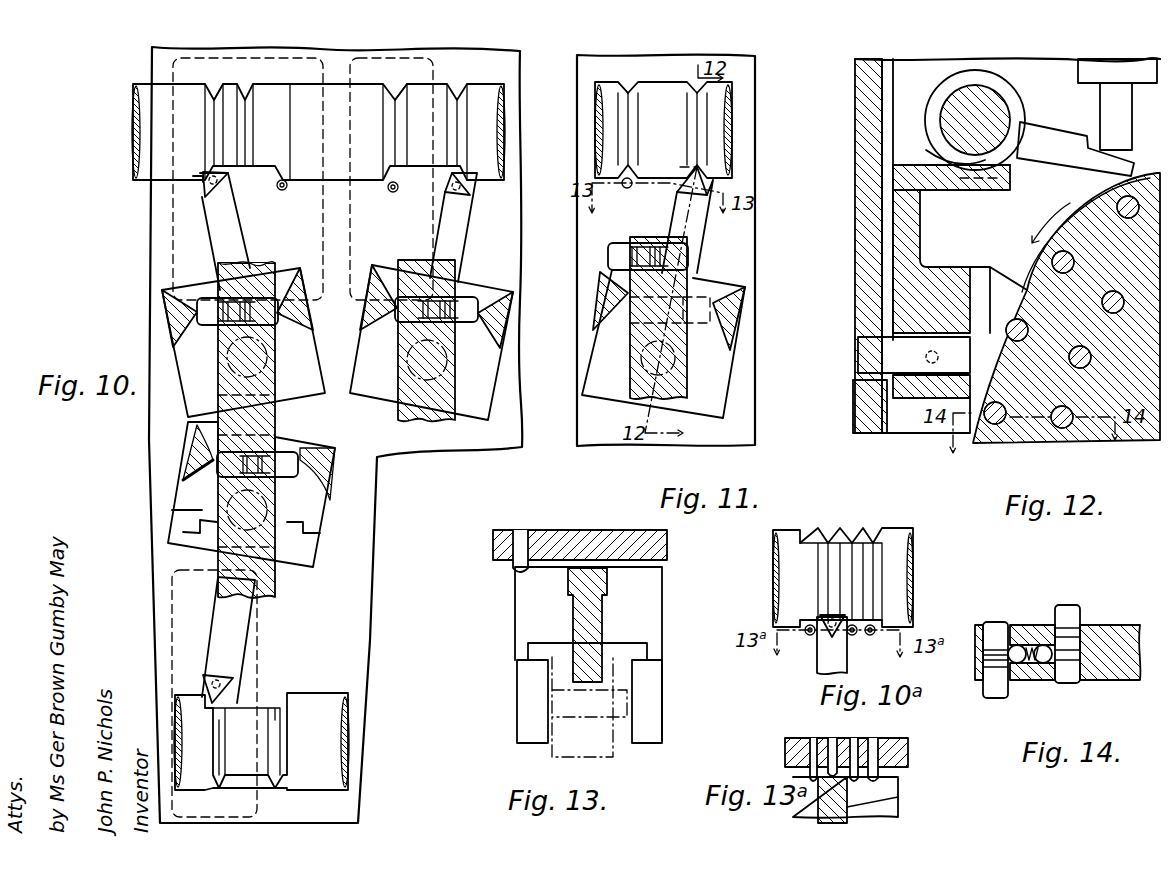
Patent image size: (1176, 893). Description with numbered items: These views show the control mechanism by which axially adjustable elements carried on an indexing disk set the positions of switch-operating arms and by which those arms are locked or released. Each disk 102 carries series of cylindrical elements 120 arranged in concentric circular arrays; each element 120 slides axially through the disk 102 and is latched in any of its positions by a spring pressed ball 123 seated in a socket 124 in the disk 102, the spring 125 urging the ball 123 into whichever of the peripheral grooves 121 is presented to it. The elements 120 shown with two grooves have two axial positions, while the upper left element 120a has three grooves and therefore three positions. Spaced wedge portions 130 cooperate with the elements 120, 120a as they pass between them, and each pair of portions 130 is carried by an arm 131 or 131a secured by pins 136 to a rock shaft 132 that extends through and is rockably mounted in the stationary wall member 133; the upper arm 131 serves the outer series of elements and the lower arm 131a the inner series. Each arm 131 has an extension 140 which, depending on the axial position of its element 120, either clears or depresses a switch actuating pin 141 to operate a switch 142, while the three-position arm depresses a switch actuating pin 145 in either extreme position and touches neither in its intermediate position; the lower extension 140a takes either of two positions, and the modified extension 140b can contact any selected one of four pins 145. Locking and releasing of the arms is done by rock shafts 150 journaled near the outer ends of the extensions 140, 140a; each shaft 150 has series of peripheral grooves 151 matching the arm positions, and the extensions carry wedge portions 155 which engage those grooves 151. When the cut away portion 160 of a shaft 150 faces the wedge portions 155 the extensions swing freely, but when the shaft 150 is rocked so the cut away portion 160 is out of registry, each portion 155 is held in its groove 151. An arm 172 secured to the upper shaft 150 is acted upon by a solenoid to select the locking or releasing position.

In FIG. 10, the disk 102 is at (275, 423).
In FIG. 11, the disk 102 is at (632, 370).
In FIG. 12, the disk 102 is at (1107, 362).
In FIG. 13, the disk 102 is at (553, 753).
In FIG. 14, the disk 102 is at (1115, 682).
In FIG. 10, the element 120 is at (463, 303).
In FIG. 11, the element 120 is at (613, 248).
In FIG. 12, the element 120 is at (1057, 432).
In FIG. 13, the element 120 is at (613, 723).
In FIG. 14, the element 120 is at (1073, 617).
In FIG. 10, the element 120a is at (202, 312).
In FIG. 14, the element 120a is at (990, 632).
In FIG. 10, the peripheral grooves 121 is at (425, 267).
In FIG. 11, the peripheral grooves 121 is at (660, 238).
In FIG. 14, the peripheral grooves 121 is at (1083, 637).
In FIG. 14, the spring pressed ball 123 is at (1018, 632).
In FIG. 14, the socket 124 is at (1032, 647).
In FIG. 14, the spring 125 is at (1032, 660).
In FIG. 10, the wedge portions 130 is at (397, 308).
In FIG. 11, the wedge portions 130 is at (595, 295).
In FIG. 12, the wedge portions 130 is at (1003, 280).
In FIG. 13, the wedge portions 130 is at (520, 682).
In FIG. 10, the arm 131 is at (183, 397).
In FIG. 11, the arm 131 is at (597, 400).
In FIG. 12, the arm 131 is at (858, 408).
In FIG. 13, the arm 131 is at (663, 605).
In FIG. 10, the arm 131a is at (175, 537).
In FIG. 10, the rock shaft 132 is at (398, 370).
In FIG. 11, the rock shaft 132 is at (685, 370).
In FIG. 12, the rock shaft 132 is at (857, 357).
In FIG. 10, the stationary wall member 133 is at (377, 530).
In FIG. 12, the stationary wall member 133 is at (855, 307).
In FIG. 13, the stationary wall member 133 is at (597, 533).
In FIG. 13A, the stationary wall member 133 is at (900, 740).
In FIG. 12, the pins 136 is at (929, 403).
In FIG. 10, the extension 140 is at (205, 237).
In FIG. 11, the extension 140 is at (705, 240).
In FIG. 12, the extension 140 is at (903, 222).
In FIG. 13, the extension 140 is at (577, 613).
In FIG. 10, the extension 140a is at (233, 643).
In FIG. 10A, the extension 140b is at (817, 670).
In FIG. 13A, the extension 140b is at (898, 802).
In FIG. 10, the switch actuating pin 141 is at (393, 192).
In FIG. 11, the switch actuating pin 141 is at (625, 188).
In FIG. 13, the switch actuating pin 141 is at (520, 530).
In FIG. 10, the switch 142 is at (173, 72).
In FIG. 10, the switch actuating pin 145 is at (230, 190).
In FIG. 10A, the switch actuating pin 145 is at (870, 635).
In FIG. 13A, the switch actuating pin 145 is at (833, 747).
In FIG. 10, the rock shaft 150 is at (133, 137).
In FIG. 11, the rock shaft 150 is at (723, 115).
In FIG. 12, the rock shaft 150 is at (957, 113).
In FIG. 10A, the rock shaft 150 is at (792, 535).
In FIG. 10, the peripheral grooves 151 is at (247, 87).
In FIG. 11, the peripheral grooves 151 is at (632, 83).
In FIG. 12, the peripheral grooves 151 is at (1003, 97).
In FIG. 10, the wedge portions 155 is at (200, 190).
In FIG. 11, the wedge portions 155 is at (677, 188).
In FIG. 12, the wedge portions 155 is at (1010, 187).
In FIG. 10, the cut away portion 160 is at (427, 173).
In FIG. 11, the cut away portion 160 is at (658, 318).
In FIG. 12, the cut away portion 160 is at (937, 155).
In FIG. 12, the arm 172 is at (1057, 137).